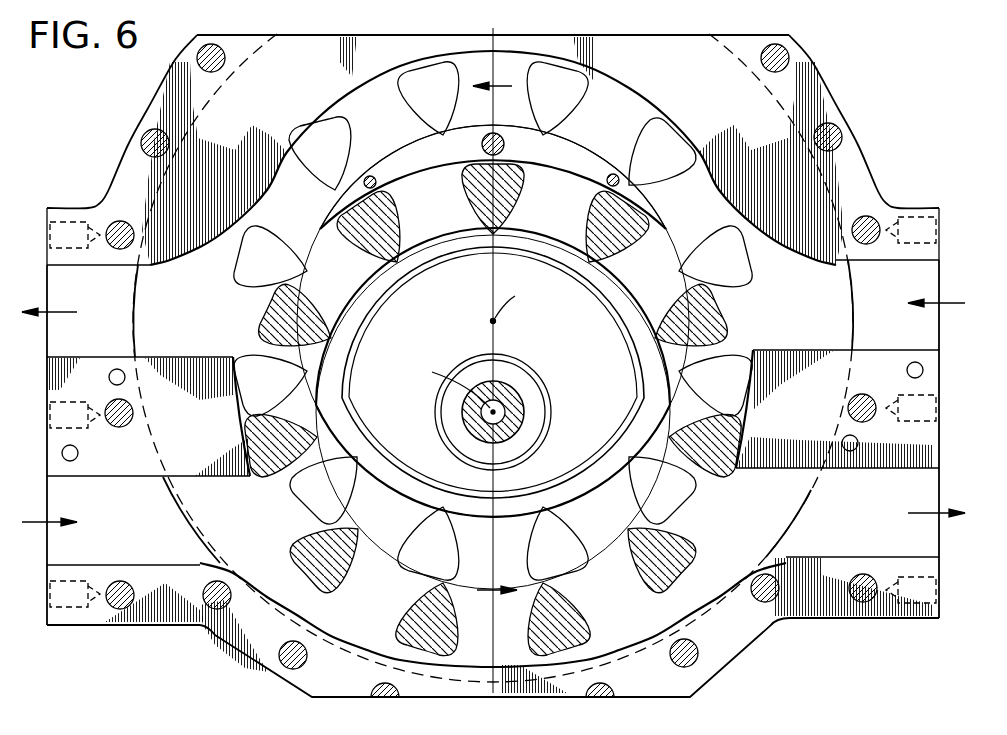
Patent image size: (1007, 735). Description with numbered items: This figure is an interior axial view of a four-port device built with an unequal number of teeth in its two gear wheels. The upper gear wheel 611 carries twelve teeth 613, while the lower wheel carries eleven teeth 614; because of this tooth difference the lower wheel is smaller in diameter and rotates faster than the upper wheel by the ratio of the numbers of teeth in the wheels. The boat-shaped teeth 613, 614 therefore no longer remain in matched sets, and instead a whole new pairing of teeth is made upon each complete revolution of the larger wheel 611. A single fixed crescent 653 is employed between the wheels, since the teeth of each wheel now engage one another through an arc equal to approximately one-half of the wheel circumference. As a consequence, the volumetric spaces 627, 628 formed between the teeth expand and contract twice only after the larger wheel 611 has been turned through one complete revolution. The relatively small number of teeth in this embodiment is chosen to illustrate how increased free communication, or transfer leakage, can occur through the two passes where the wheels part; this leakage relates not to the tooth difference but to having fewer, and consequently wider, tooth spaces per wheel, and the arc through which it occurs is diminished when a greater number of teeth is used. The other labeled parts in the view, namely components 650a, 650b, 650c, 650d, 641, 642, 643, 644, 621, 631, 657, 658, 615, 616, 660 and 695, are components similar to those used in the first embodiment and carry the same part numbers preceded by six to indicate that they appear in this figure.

The bolt hole 695 is at (146, 132).
The upper housing section 650a is at (832, 90).
The teeth 613 is at (346, 174).
The fixed crescent 653 is at (458, 159).
The volumetric space 627 is at (623, 124).
The roller 615 is at (672, 135).
The teeth 614 is at (396, 237).
The pin 616 is at (622, 192).
The eccentric rotor ring 660 is at (458, 314).
The inlet port 641 is at (108, 296).
The inlet port 643 is at (900, 305).
The port wall surface 621 is at (838, 318).
The housing abutment face 657 is at (247, 420).
The housing abutment face 658 is at (740, 413).
The left housing section 650c is at (148, 416).
The right housing section 650d is at (837, 409).
The outlet port 642 is at (146, 539).
The outlet port 644 is at (873, 504).
The upper gear wheel 611 is at (752, 522).
The passage 631 is at (863, 544).
The volumetric space 628 is at (391, 611).
The lower housing section 650b is at (243, 653).